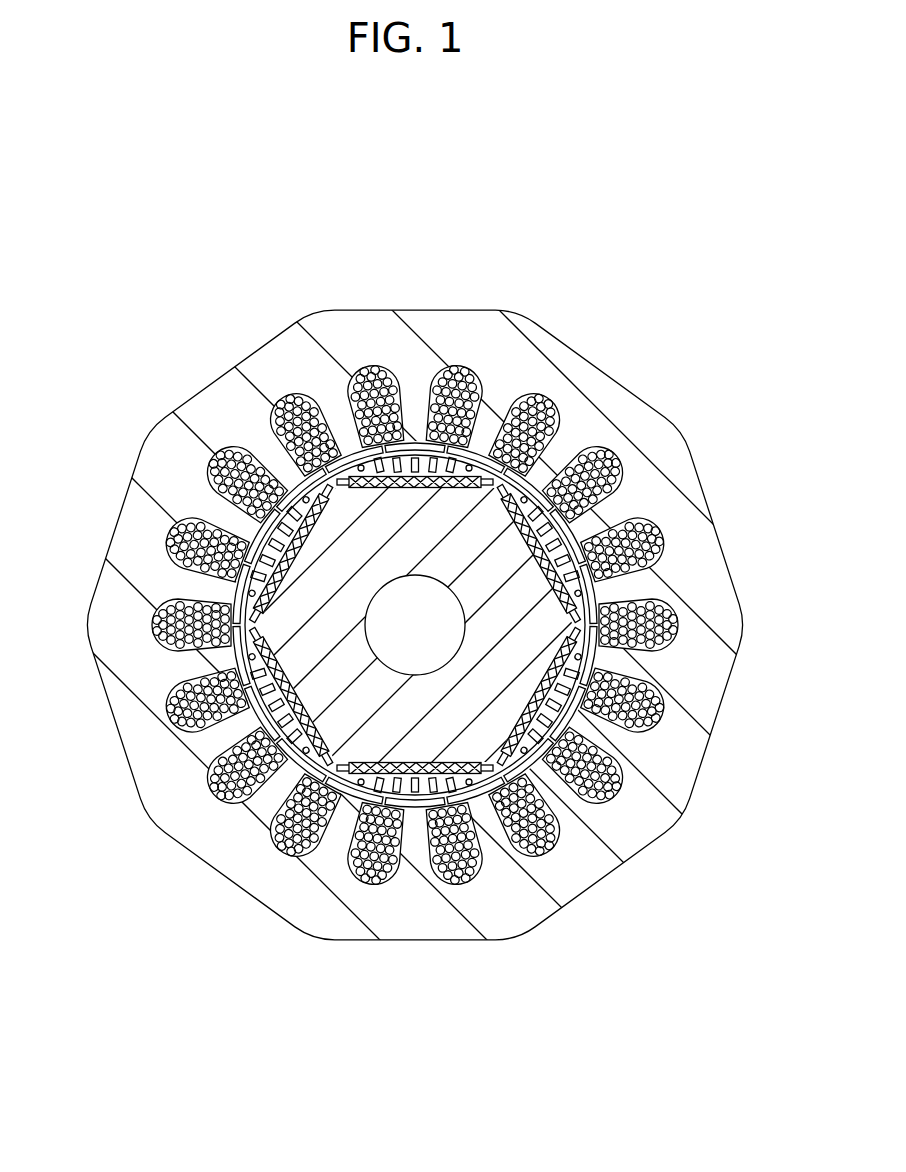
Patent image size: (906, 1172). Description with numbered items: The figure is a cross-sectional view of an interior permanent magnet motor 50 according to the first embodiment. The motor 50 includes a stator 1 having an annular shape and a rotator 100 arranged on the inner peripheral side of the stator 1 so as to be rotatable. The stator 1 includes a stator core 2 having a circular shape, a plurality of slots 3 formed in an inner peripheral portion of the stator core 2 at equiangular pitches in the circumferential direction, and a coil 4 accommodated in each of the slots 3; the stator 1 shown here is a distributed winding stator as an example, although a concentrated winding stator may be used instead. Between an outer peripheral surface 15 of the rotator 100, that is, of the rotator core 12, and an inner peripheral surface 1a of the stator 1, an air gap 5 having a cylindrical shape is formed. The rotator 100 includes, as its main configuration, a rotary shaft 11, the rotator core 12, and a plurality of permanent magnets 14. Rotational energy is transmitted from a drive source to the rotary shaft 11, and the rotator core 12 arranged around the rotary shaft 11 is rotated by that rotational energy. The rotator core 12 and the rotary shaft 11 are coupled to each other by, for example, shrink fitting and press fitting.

The interior permanent magnet motor 50 is at (147, 265).
The stator 1 is at (431, 328).
The inner peripheral surface 1a is at (451, 800).
The stator core 2 is at (578, 368).
The slots 3 is at (600, 455).
The coil 4 is at (660, 602).
The air gap 5 is at (588, 660).
The rotary shaft 11 is at (272, 760).
The rotator core 12 is at (628, 648).
The permanent magnets 14 is at (188, 710).
The outer peripheral surface 15 is at (590, 800).
The rotator 100 is at (372, 778).